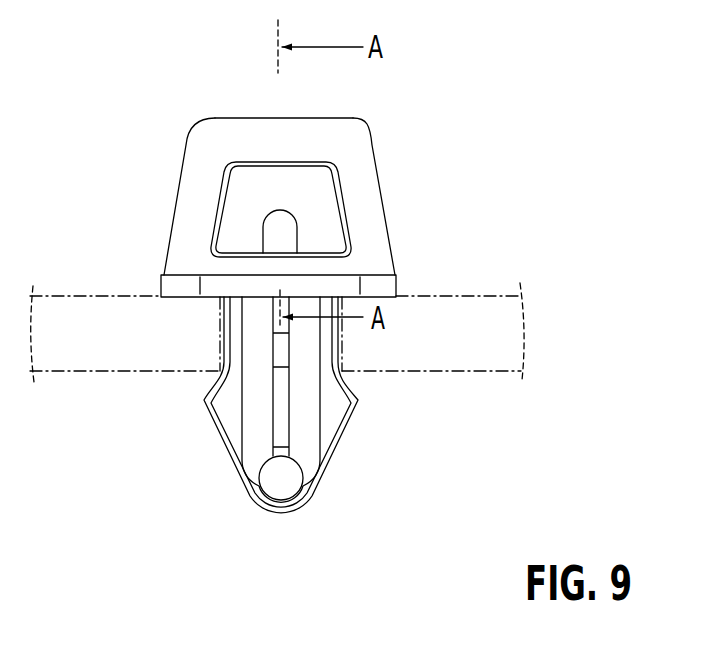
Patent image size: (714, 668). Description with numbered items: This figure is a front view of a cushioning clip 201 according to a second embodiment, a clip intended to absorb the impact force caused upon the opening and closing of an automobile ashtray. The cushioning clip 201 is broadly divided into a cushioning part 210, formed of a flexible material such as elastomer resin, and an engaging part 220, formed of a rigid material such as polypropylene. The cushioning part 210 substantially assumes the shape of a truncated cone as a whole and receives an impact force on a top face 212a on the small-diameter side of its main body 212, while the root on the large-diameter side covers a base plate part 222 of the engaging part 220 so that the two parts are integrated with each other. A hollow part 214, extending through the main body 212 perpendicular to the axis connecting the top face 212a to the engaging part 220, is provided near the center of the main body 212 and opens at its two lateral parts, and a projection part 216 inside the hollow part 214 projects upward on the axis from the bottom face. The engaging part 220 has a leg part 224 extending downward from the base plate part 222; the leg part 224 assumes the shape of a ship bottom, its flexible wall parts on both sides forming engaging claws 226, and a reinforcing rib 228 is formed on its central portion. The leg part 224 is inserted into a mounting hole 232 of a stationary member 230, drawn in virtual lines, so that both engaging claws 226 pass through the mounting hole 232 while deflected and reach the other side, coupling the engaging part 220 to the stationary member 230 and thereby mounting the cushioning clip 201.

The cushioning clip 201 is at (497, 177).
The cushioning part 210 is at (390, 117).
The main body 212 is at (180, 190).
The top face 212a is at (228, 116).
The hollow part 214 is at (311, 196).
The projection part 216 is at (278, 221).
The engaging part 220 is at (217, 467).
The base plate part 222 is at (335, 285).
The leg part 224 is at (252, 338).
The engaging claws 226 is at (200, 403).
The reinforcing rib 228 is at (283, 430).
The stationary member 230 is at (468, 310).
The mounting hole 232 is at (218, 320).